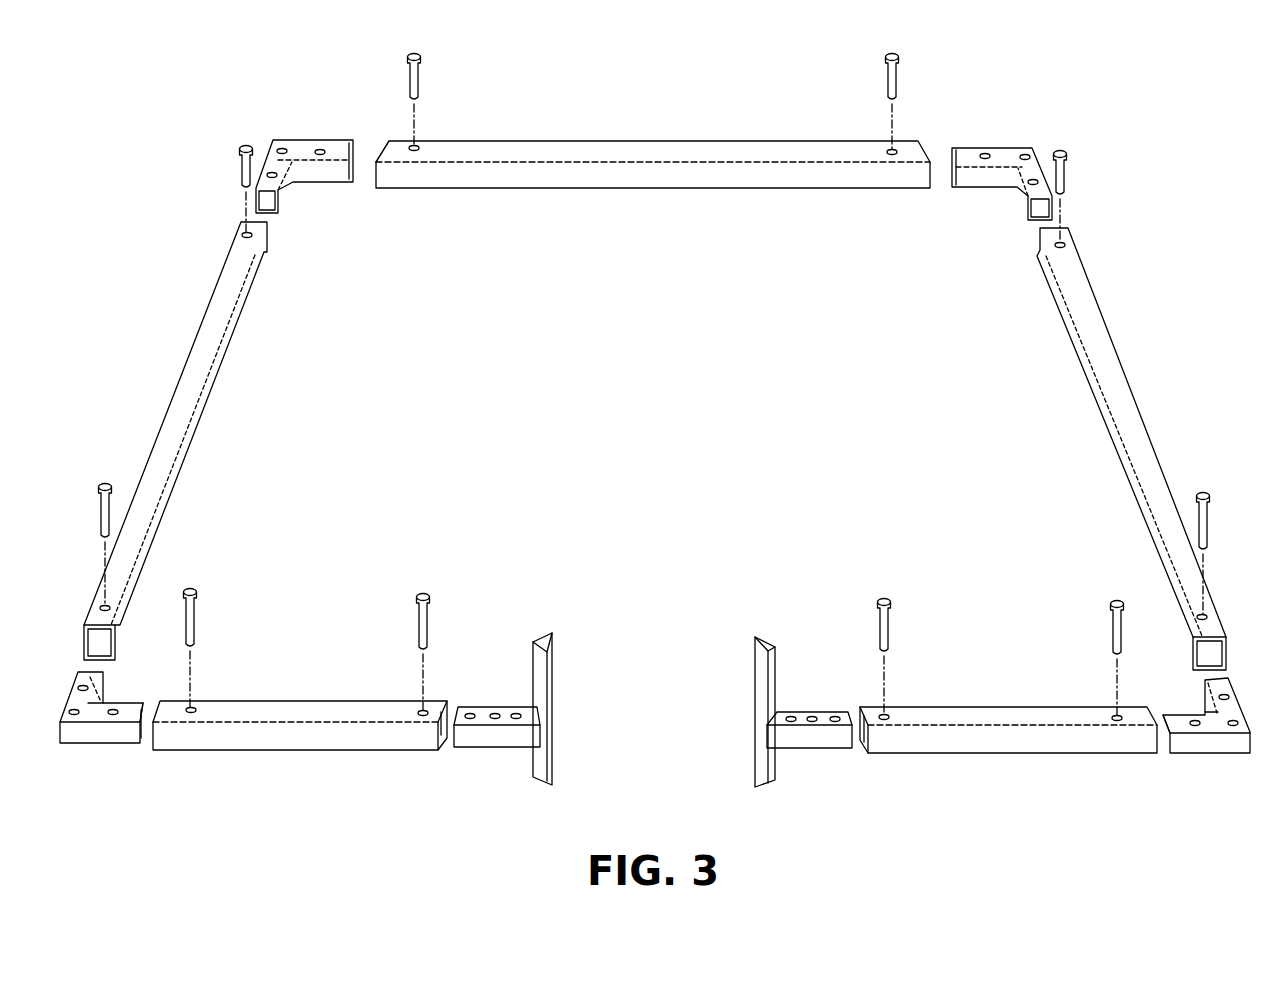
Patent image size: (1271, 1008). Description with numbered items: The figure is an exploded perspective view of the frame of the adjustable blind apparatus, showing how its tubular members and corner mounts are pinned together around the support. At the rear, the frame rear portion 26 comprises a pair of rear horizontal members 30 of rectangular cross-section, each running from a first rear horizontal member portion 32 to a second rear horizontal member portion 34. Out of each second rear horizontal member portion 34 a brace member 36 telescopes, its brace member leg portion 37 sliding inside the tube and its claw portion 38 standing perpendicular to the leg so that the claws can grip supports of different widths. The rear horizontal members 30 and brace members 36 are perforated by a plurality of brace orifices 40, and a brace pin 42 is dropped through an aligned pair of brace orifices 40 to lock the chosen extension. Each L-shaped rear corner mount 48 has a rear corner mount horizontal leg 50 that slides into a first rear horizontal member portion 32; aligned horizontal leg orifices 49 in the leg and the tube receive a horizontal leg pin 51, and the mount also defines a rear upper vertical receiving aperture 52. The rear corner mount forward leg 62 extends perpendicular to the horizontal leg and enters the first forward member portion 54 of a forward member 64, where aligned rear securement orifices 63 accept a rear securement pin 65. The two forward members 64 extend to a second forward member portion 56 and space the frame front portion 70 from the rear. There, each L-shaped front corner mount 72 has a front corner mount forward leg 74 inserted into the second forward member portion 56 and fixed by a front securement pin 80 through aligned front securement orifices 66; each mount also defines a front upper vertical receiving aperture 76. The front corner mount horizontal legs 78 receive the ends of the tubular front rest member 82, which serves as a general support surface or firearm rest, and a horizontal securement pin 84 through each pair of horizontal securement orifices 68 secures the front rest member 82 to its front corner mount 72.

The frame rear portion 26 is at (655, 722).
The rear horizontal member 30 is at (655, 721).
The first rear horizontal member portion 32 is at (655, 721).
The second rear horizontal member portion 34 is at (422, 737).
The brace member 36 is at (653, 719).
The brace member leg portion 37 is at (485, 707).
The claw portion 38 is at (555, 690).
The brace orifice 40 is at (420, 713).
The brace pin 42 is at (424, 592).
The rear corner mount 48 is at (654, 722).
The horizontal leg orifice 49 is at (115, 712).
The rear corner mount horizontal leg 50 is at (656, 722).
The horizontal leg pin 51 is at (192, 588).
The rear upper vertical receiving aperture 52 is at (74, 715).
The first forward member portion 54 is at (130, 597).
The second forward member portion 56 is at (655, 446).
The rear corner mount forward leg 62 is at (100, 688).
The rear securement orifice 63 is at (102, 608).
The forward member 64 is at (655, 446).
The rear securement pin 65 is at (106, 480).
The front securement orifice 66 is at (270, 170).
The horizontal securement orifice 68 is at (414, 152).
The frame front portion 70 is at (653, 208).
The front corner mount 72 is at (684, 169).
The front corner mount forward leg 74 is at (283, 192).
The front upper vertical receiving aperture 76 is at (287, 150).
The front corner mount horizontal leg 78 is at (688, 169).
The front securement pin 80 is at (243, 165).
The front rest member 82 is at (678, 178).
The horizontal securement pin 84 is at (418, 70).